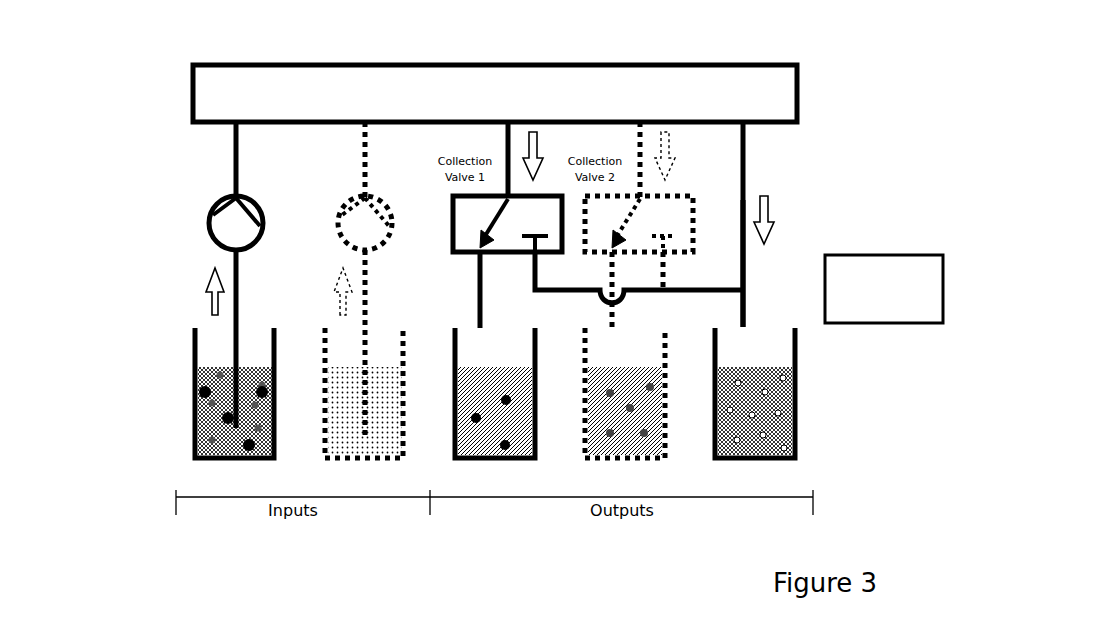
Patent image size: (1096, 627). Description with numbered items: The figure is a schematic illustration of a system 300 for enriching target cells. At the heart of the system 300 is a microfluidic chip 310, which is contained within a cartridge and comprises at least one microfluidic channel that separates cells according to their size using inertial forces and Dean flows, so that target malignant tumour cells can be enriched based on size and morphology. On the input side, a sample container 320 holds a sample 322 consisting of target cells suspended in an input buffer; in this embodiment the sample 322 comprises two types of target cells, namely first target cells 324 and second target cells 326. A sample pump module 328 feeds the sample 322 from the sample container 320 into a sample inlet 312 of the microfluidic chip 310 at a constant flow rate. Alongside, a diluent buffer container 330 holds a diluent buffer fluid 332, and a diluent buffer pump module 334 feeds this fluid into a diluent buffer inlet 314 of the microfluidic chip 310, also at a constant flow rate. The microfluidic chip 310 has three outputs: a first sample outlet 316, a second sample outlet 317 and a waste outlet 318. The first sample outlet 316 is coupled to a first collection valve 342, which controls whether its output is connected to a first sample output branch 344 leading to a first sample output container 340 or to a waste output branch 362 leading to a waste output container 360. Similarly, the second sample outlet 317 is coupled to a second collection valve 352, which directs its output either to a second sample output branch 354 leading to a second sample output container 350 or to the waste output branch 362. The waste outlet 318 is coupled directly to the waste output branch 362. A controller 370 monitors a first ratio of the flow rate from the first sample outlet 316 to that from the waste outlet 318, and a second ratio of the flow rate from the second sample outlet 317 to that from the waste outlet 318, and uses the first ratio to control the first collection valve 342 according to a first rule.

The system 300 is at (148, 78).
The microfluidic chip 310 is at (788, 88).
The sample inlet 312 is at (232, 124).
The diluent buffer inlet 314 is at (362, 124).
The first sample outlet 316 is at (505, 124).
The second sample outlet 317 is at (636, 124).
The waste outlet 318 is at (748, 124).
The sample container 320 is at (175, 418).
The sample 322 is at (226, 417).
The first target cells 324 is at (196, 387).
The second target cells 326 is at (217, 373).
The sample pump module 328 is at (218, 228).
The diluent buffer container 330 is at (380, 451).
The diluent buffer fluid 332 is at (383, 440).
The diluent buffer pump module 334 is at (356, 232).
The first sample output container 340 is at (480, 385).
The first collection valve 342 is at (472, 238).
The first sample output branch 344 is at (478, 293).
The second sample output container 350 is at (662, 349).
The second collection valve 352 is at (660, 207).
The second sample output branch 354 is at (614, 323).
The waste output container 360 is at (798, 420).
The waste output branch 362 is at (746, 255).
The controller 370 is at (884, 324).